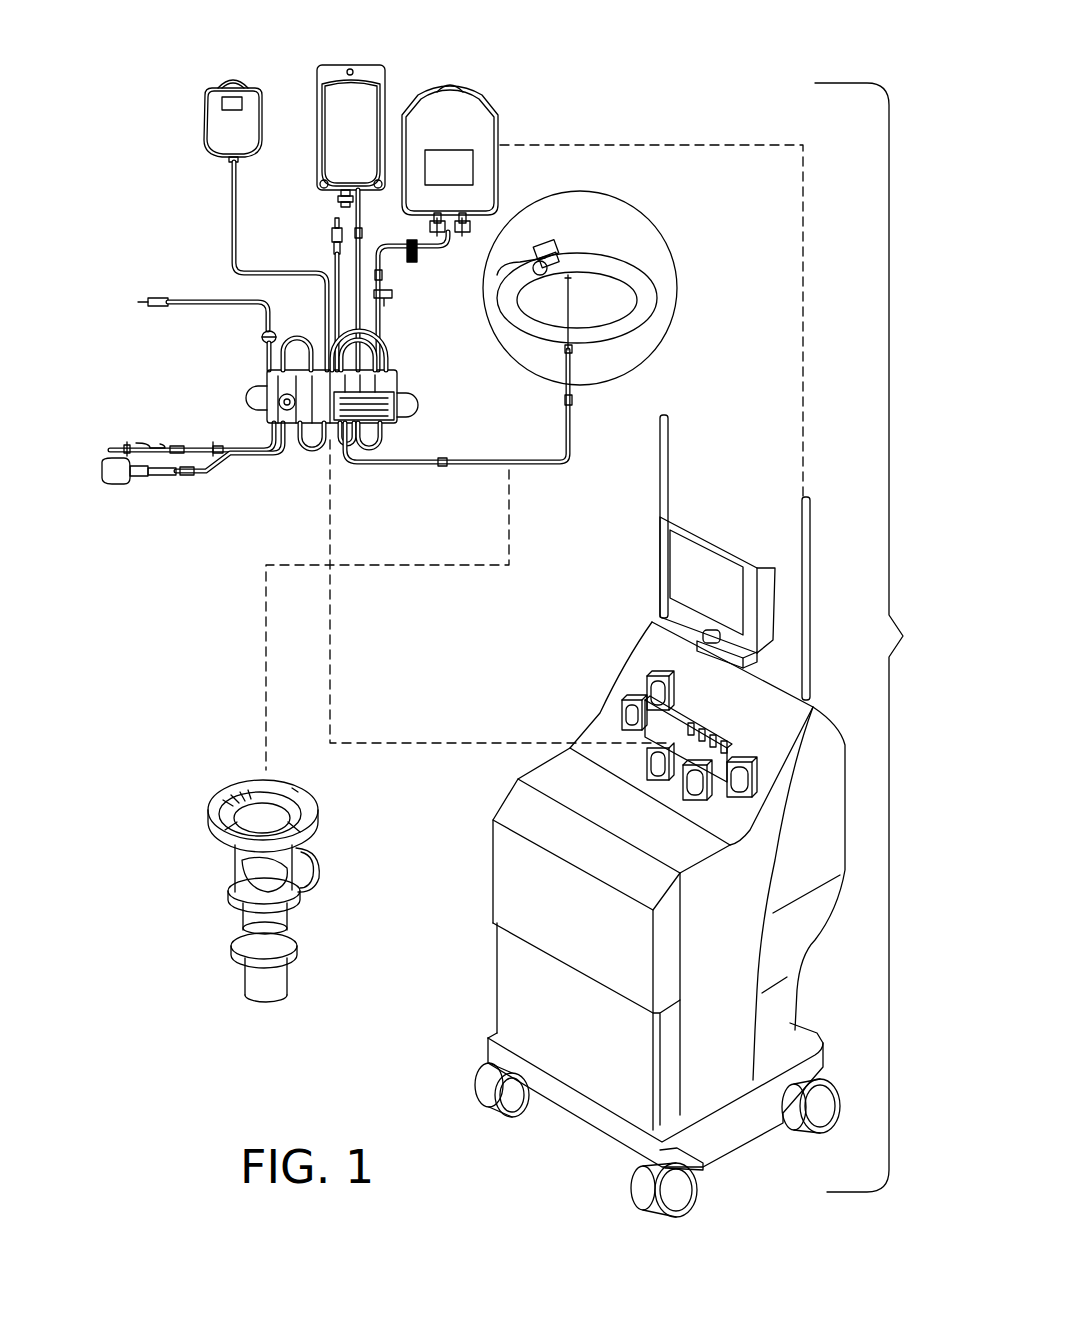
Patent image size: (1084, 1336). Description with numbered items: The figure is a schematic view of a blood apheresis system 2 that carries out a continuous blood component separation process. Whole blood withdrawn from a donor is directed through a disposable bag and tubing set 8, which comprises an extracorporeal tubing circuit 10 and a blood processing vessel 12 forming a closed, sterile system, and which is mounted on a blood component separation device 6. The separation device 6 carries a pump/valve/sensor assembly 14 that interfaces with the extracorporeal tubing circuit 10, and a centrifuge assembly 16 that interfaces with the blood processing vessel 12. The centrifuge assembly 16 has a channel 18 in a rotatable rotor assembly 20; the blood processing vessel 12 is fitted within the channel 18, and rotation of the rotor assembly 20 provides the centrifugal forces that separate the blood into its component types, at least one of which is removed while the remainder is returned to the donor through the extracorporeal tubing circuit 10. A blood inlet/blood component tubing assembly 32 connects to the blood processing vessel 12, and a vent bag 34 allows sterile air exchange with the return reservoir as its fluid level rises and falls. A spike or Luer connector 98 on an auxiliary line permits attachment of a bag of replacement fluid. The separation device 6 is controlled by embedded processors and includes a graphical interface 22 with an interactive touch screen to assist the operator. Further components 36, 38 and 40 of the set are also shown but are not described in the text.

The blood apheresis system 2 is at (903, 636).
The blood component separation device 6 is at (484, 961).
The bag and tubing set 8 is at (178, 406).
The extracorporeal tubing circuit 10 is at (237, 382).
The blood processing vessel 12 is at (684, 284).
The pump/valve/sensor assembly 14 is at (614, 720).
The centrifuge assembly 16 is at (253, 867).
The channel 18 is at (300, 828).
The rotor assembly 20 is at (218, 886).
The graphical interface 22 is at (698, 577).
The blood inlet/blood component tubing assembly 32 is at (418, 468).
The vent bag 34 is at (203, 98).
The saline container 36 is at (385, 90).
The collection container 38 is at (477, 95).
The spike line 40 is at (167, 303).
The spike or Luer connector 98 is at (333, 242).